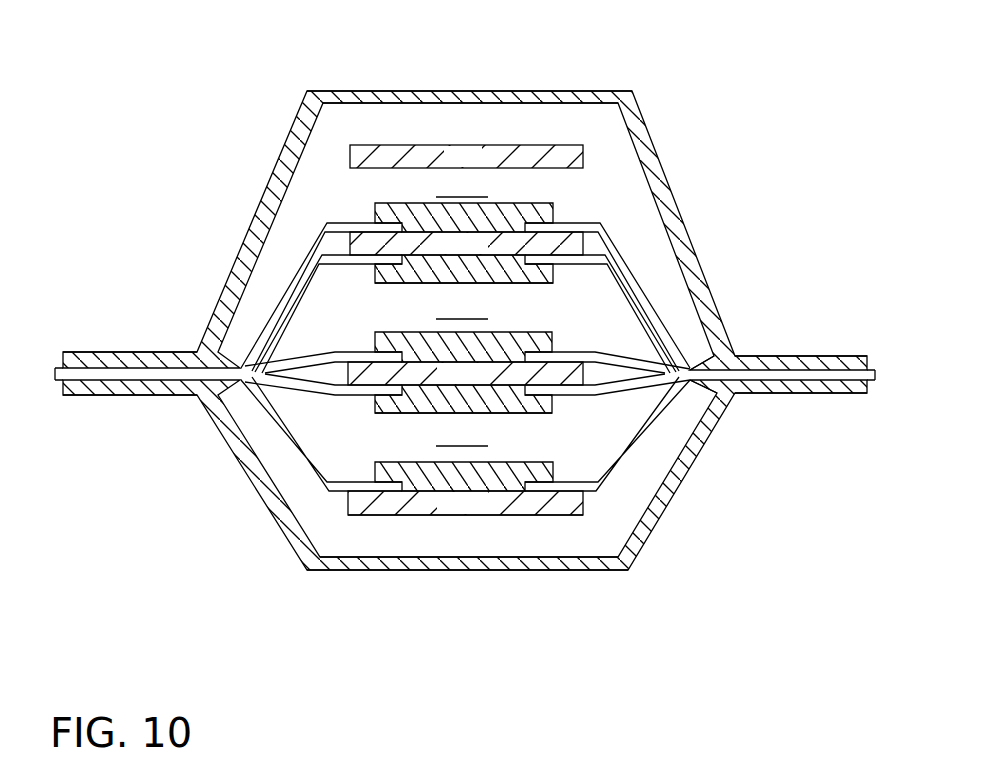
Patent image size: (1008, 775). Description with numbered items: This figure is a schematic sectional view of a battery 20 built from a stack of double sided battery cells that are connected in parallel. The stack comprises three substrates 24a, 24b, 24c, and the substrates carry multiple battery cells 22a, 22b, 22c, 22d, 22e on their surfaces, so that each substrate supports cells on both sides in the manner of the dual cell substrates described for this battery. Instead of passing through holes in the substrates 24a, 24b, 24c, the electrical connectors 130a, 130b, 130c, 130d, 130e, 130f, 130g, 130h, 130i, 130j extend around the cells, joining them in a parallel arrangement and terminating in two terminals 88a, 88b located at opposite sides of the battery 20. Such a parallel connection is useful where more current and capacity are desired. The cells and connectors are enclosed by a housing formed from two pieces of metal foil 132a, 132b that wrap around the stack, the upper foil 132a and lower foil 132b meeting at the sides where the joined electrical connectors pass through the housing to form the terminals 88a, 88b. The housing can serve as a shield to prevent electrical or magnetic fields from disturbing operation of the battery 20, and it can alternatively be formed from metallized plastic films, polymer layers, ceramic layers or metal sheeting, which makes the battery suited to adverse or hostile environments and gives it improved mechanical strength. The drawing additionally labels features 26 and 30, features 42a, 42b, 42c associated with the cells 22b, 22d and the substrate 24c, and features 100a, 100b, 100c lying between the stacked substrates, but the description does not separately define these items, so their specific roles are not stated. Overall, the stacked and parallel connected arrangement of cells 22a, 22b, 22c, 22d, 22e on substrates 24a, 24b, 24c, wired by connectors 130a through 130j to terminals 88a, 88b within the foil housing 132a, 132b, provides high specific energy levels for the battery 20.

The battery 20 is at (718, 92).
The housing 26 is at (476, 165).
The port opening 30 is at (698, 396).
The battery cell 22a is at (541, 201).
The battery cell 22b is at (395, 289).
The battery cell 22c is at (539, 330).
The battery cell 22d is at (397, 416).
The battery cell 22e is at (536, 459).
The substrate 24a is at (440, 254).
The substrate 24b is at (440, 383).
The substrate 24c is at (440, 513).
The electrode surface 42a is at (534, 285).
The electrode surface 42b is at (532, 414).
The plate surface 42c is at (490, 516).
The terminal 88a is at (827, 376).
The terminal 88b is at (113, 374).
The chamber 100a is at (462, 186).
The chamber 100b is at (461, 308).
The chamber 100c is at (462, 435).
The electrical connector 130a is at (324, 226).
The electrical connector 130b is at (297, 292).
The electrical connector 130c is at (264, 333).
The electrical connector 130d is at (285, 423).
The electrical connector 130e is at (317, 477).
The electrical connector 130f is at (612, 238).
The electrical connector 130g is at (615, 262).
The electrical connector 130h is at (632, 358).
The electrical connector 130i is at (620, 476).
The electrical connector 130j is at (652, 492).
The metal foil 132a is at (584, 91).
The metal foil 132b is at (584, 571).